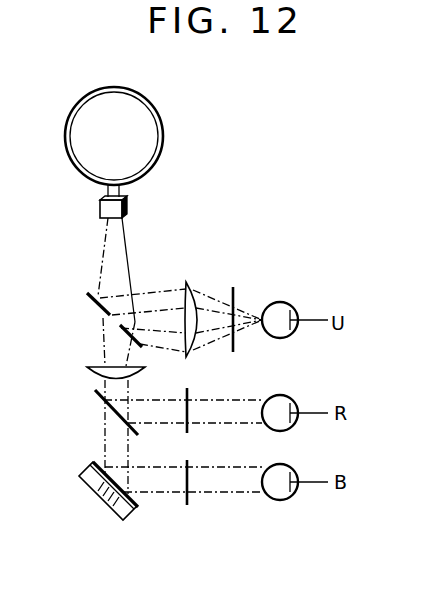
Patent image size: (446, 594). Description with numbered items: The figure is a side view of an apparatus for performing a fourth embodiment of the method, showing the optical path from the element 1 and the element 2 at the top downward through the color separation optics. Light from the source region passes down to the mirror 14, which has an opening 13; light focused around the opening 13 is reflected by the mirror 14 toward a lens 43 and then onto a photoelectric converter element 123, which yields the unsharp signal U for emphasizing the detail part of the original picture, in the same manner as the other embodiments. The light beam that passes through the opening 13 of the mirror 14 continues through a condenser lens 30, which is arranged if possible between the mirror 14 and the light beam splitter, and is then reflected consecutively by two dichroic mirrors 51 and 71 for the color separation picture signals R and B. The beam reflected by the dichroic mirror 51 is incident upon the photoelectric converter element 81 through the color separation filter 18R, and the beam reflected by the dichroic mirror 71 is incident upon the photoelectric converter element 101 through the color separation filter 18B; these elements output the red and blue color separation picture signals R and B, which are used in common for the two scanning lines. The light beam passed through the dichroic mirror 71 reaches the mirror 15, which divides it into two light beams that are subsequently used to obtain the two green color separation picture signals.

The color filter disc / light source ring 1 is at (70, 160).
The light source 2 is at (128, 207).
The opening 13 is at (112, 330).
The mirror 14 is at (88, 297).
The condenser lens 30 is at (87, 368).
The lens 43 is at (191, 282).
The dichroic mirror 51 is at (97, 392).
The dichroic mirror 71 is at (137, 503).
The mirror 15 is at (88, 483).
The photoelectric converter element 123 is at (293, 306).
The photoelectric converter element 81 is at (287, 398).
The photoelectric converter element 101 is at (285, 466).
The color separation filter 18R is at (188, 391).
The color separation filter 18B is at (188, 464).